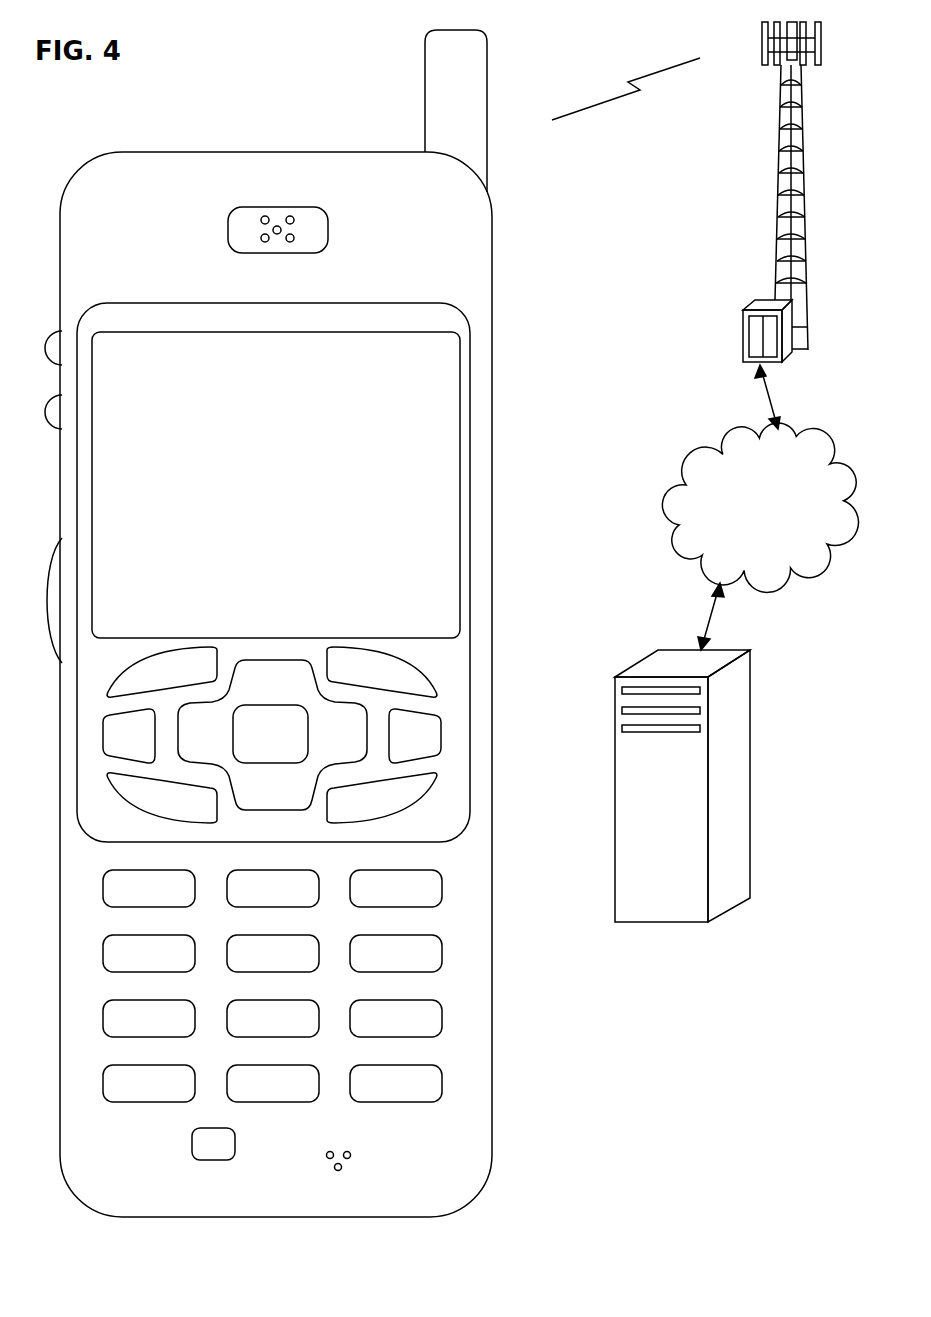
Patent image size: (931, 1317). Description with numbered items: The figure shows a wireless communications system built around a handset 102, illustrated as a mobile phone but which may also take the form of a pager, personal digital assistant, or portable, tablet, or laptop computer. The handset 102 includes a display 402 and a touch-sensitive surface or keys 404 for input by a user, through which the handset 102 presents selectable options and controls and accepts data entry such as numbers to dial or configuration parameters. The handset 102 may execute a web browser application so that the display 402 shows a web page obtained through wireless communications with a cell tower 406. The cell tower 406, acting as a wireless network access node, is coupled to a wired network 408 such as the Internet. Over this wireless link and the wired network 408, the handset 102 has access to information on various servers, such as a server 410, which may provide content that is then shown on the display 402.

The handset 102 is at (113, 1217).
The display 402 is at (470, 340).
The keys 404 is at (497, 1116).
The cell tower 406 is at (776, 207).
The wired network 408 is at (683, 563).
The server 410 is at (660, 922).